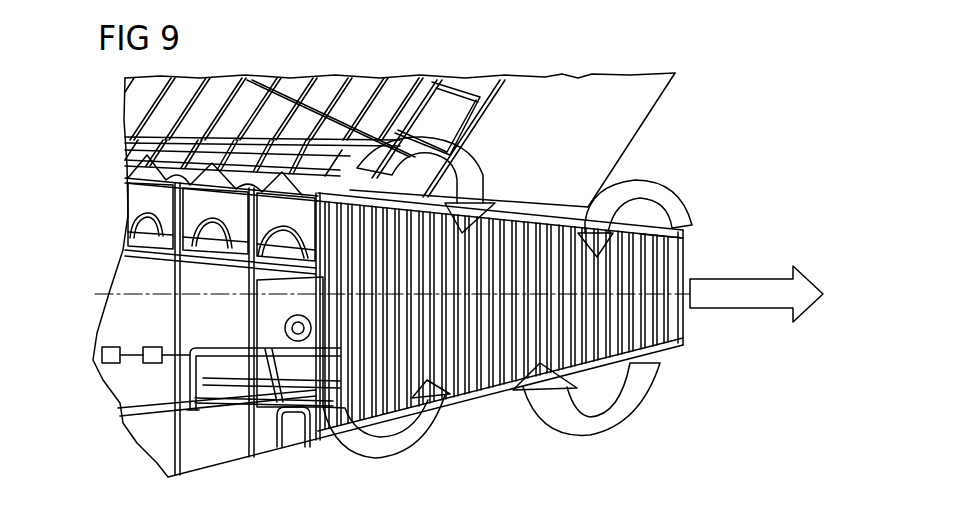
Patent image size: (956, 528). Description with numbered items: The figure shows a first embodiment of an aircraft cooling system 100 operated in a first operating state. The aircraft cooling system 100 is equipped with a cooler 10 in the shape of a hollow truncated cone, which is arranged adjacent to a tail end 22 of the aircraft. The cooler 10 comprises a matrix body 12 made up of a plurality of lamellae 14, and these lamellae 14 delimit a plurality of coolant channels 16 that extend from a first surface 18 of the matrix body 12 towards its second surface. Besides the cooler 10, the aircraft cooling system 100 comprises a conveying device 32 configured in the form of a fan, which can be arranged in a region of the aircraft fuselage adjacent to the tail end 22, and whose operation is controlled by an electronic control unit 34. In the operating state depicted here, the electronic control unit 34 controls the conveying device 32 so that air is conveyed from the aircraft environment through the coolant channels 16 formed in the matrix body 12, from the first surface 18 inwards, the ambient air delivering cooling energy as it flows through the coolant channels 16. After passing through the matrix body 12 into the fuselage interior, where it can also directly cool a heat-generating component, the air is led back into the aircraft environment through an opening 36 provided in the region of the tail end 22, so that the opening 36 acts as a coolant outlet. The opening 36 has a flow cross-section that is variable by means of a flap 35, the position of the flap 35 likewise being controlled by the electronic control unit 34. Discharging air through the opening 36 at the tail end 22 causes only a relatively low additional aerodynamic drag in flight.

The aircraft cooling system 100 is at (830, 292).
The cooler 10 is at (684, 240).
The matrix body 12 is at (637, 243).
The lamellae 14 is at (684, 269).
The coolant channels 16 is at (652, 347).
The first surface 18 is at (503, 392).
The tail end 22 is at (683, 347).
The conveying device 32 is at (152, 346).
The electronic control unit 34 is at (113, 364).
The flap 35 is at (650, 250).
The opening 36 is at (684, 322).